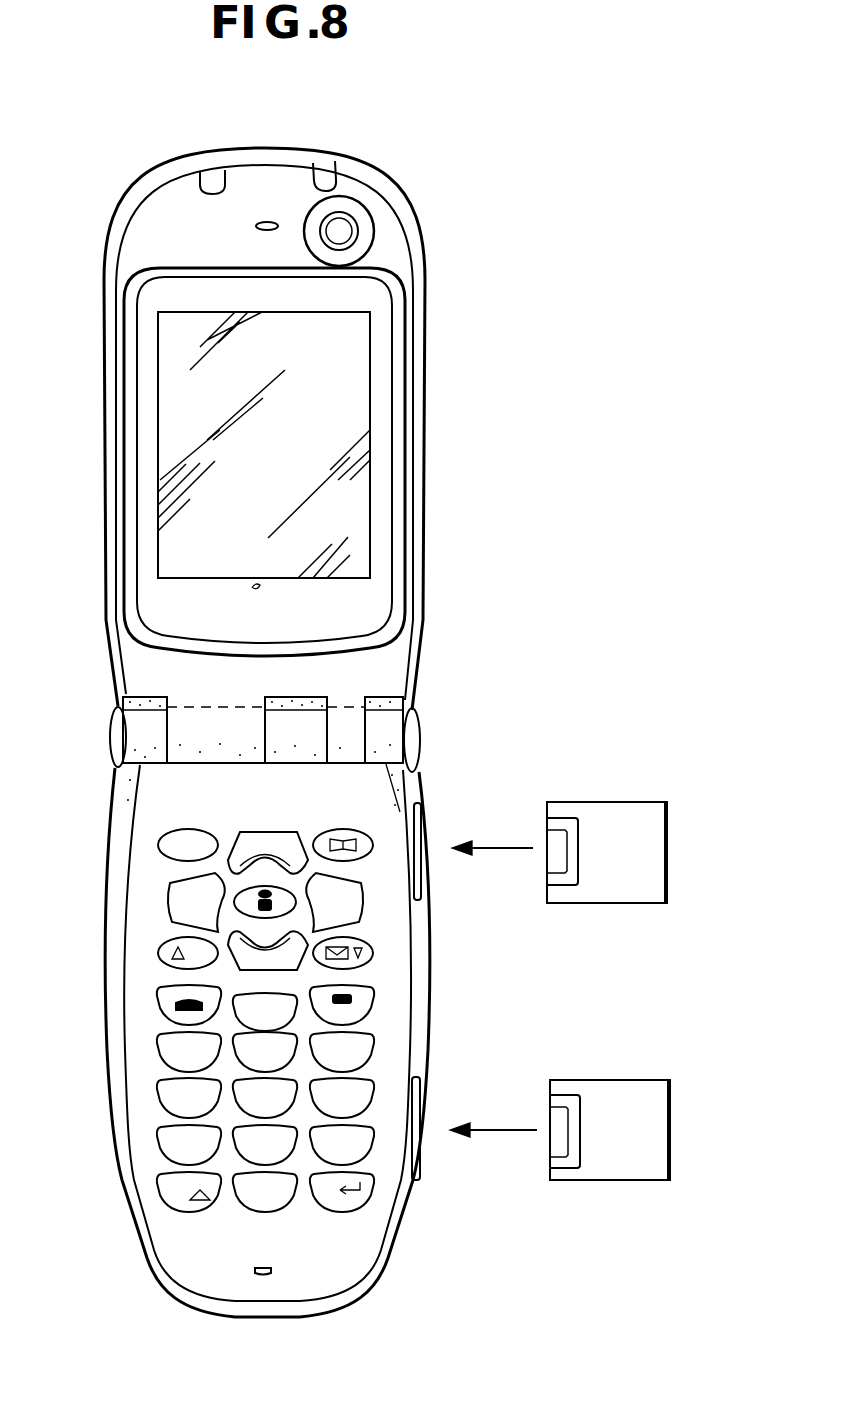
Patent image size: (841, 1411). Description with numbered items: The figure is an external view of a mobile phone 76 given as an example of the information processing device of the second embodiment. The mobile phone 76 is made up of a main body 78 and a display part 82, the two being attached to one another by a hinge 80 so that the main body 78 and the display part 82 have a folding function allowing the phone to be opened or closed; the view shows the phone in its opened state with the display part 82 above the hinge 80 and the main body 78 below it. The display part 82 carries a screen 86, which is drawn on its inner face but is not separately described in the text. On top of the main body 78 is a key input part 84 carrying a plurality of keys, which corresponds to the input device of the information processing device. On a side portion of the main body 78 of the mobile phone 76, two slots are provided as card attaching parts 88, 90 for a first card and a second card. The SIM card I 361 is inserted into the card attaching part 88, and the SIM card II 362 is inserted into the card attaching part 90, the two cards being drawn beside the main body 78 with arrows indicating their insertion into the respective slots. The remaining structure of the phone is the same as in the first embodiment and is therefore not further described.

The mobile phone 76 is at (367, 1300).
The main body 78 is at (372, 1267).
The hinge 80 is at (420, 735).
The display part 82 is at (426, 540).
The key input part 84 is at (88, 1213).
The display 86 is at (368, 408).
The card attaching part 88 is at (420, 900).
The card attaching part 90 is at (432, 1100).
The SIM card I 361 is at (668, 852).
The SIM card II 362 is at (671, 1132).